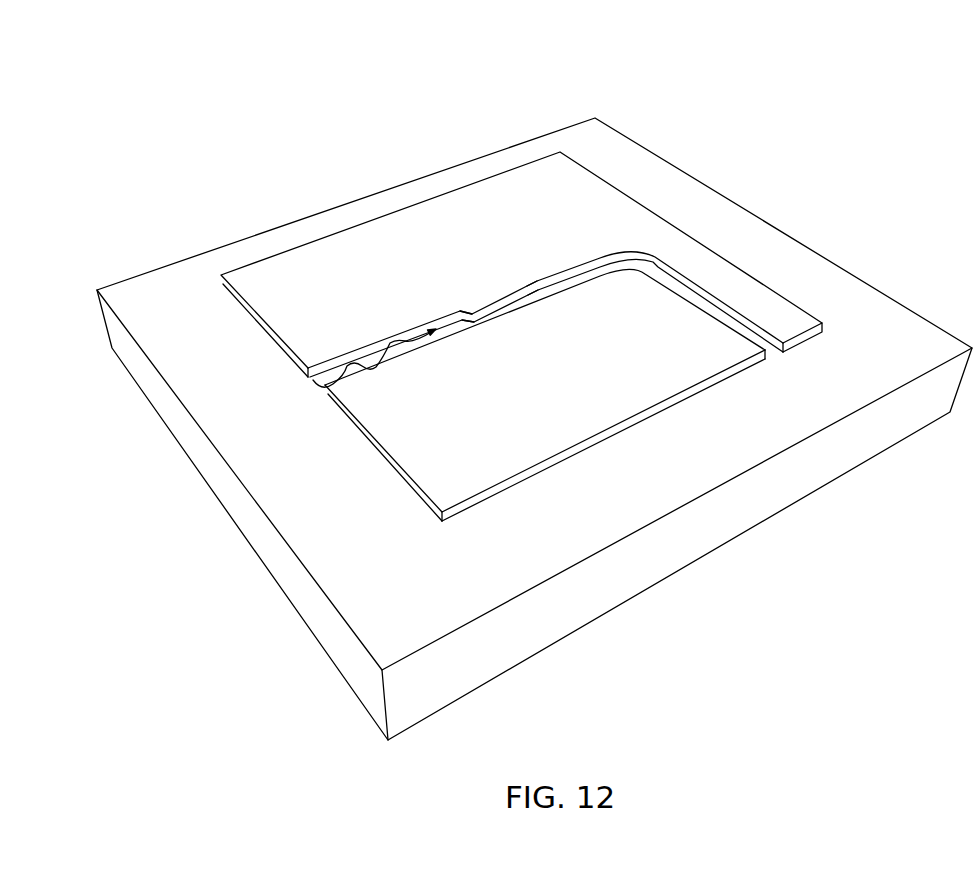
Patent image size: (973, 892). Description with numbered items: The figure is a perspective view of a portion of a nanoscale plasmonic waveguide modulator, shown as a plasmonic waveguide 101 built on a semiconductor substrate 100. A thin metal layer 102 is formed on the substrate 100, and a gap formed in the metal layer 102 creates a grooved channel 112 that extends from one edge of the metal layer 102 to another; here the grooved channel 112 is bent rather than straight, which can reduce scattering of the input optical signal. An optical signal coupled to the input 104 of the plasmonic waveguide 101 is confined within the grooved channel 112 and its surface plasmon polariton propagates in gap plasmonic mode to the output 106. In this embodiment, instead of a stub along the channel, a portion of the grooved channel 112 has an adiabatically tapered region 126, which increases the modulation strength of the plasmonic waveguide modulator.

The semiconductor substrate 100 is at (332, 550).
The plasmonic waveguide 101 is at (795, 94).
The metal layer 102 is at (450, 203).
The input 104 is at (313, 380).
The output 106 is at (775, 352).
The grooved channel 112 is at (668, 283).
The adiabatically tapered region 126 is at (503, 300).